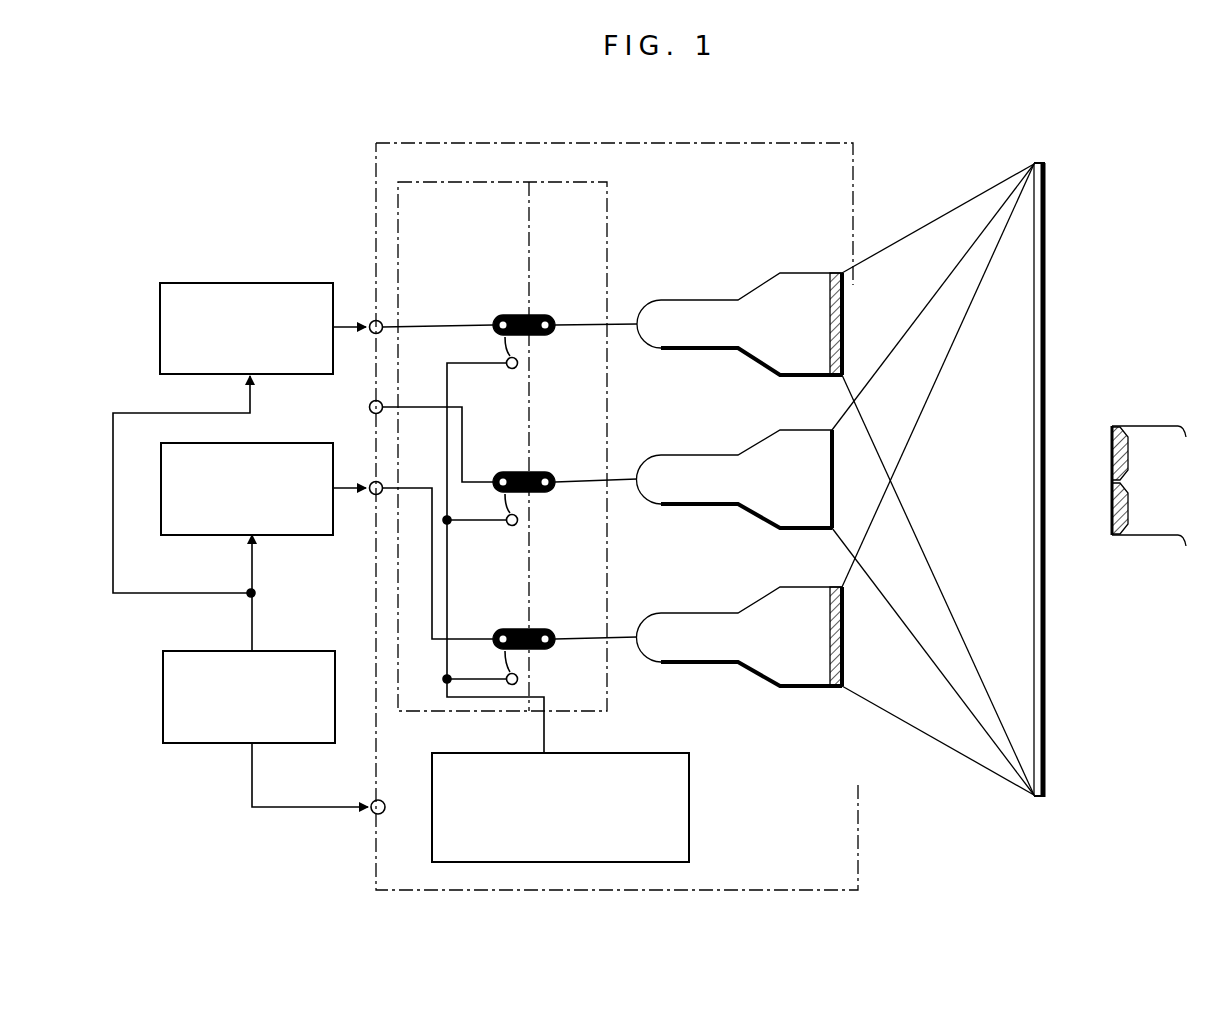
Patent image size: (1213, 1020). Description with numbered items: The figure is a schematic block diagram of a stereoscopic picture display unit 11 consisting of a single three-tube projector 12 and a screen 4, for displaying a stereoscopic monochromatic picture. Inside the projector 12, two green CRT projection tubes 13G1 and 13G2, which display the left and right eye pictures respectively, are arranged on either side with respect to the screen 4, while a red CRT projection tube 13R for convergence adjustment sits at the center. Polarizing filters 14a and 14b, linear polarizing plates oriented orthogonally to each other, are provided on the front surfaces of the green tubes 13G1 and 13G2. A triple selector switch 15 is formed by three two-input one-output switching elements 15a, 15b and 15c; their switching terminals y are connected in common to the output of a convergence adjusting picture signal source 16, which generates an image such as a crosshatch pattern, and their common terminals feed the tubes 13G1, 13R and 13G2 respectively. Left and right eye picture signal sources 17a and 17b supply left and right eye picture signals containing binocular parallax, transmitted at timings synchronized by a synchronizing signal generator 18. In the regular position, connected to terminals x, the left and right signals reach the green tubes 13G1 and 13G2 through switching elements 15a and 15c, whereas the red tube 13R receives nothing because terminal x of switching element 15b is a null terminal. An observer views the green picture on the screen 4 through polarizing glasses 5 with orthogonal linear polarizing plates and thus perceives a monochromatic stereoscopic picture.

The stereoscopic picture display unit 11 is at (902, 164).
The projector 12 is at (512, 140).
The green CRT projection tube 13G2 is at (749, 299).
The red CRT projection tube 13R is at (748, 455).
The green CRT projection tube 13G1 is at (750, 613).
The polarizing filter 14a is at (845, 637).
The polarizing filter 14b is at (842, 310).
The triple selector switch 15 is at (607, 222).
The switching element 15a is at (545, 630).
The switching element 15b is at (545, 470).
The switching element 15c is at (530, 313).
The convergence adjusting picture signal source 16 is at (689, 790).
The left eye picture signal source 17a is at (297, 443).
The right eye picture signal source 17b is at (297, 283).
The synchronizing signal generator 18 is at (297, 651).
The screen 4 is at (1046, 752).
The polarizing glasses 5 is at (1128, 538).